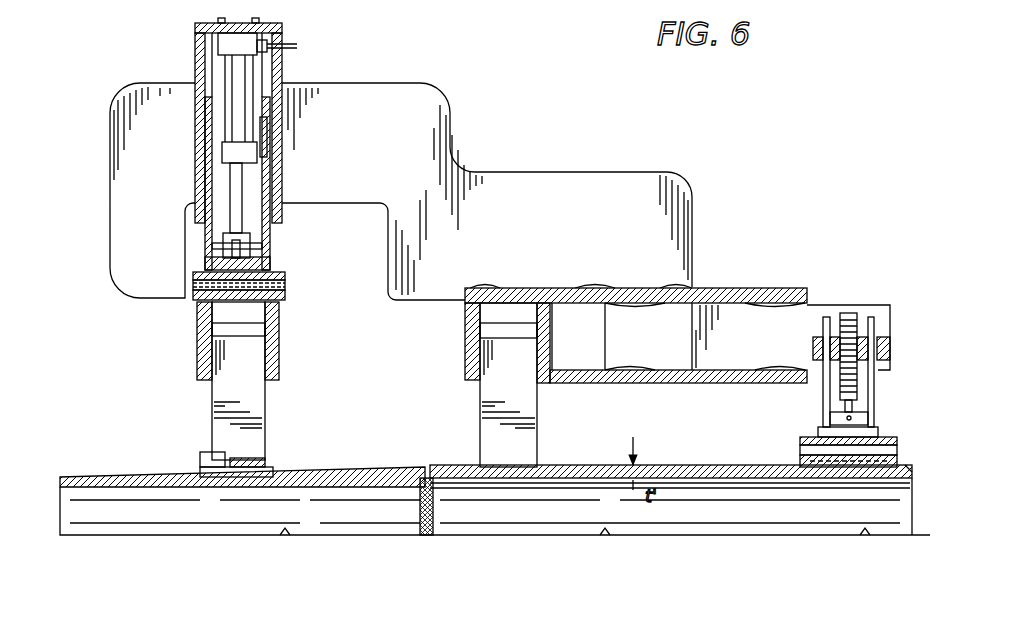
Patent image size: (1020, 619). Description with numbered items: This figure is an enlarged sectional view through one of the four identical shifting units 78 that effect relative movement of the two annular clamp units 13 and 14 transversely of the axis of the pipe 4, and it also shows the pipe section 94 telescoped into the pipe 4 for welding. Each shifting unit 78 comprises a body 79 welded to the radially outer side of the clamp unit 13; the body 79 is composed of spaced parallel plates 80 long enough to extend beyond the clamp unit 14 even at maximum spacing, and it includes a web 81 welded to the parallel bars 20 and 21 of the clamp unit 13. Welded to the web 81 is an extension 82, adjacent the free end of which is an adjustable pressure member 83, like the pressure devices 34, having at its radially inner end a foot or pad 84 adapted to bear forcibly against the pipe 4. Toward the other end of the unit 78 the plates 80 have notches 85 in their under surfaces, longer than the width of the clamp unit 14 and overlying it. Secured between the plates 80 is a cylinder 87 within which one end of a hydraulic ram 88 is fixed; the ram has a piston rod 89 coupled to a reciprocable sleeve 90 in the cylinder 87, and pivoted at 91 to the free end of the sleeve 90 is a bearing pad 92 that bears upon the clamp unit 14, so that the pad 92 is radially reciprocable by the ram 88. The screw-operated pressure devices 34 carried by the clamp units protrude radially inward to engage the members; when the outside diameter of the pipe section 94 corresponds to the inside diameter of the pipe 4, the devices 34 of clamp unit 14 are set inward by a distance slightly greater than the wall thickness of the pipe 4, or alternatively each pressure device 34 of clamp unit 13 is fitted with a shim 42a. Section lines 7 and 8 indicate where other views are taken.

The pipe 4 is at (666, 466).
The section line 7 is at (908, 548).
The section line 8 is at (190, 413).
The clamp unit 13 is at (450, 361).
The clamp unit 14 is at (137, 350).
The bar 20 is at (197, 346).
The bar 21 is at (280, 361).
The adjustable pressure device 34 is at (270, 424).
The shim 42a is at (200, 458).
The shifting means 78 is at (418, 42).
The body 79 is at (440, 118).
The plate 80 is at (530, 241).
The web 81 is at (620, 290).
The extension 82 is at (625, 385).
The adjustable pressure member 83 is at (805, 402).
The foot or pad 84 is at (800, 456).
The notch 85 is at (337, 205).
The cylinder 87 is at (283, 70).
The hydraulic ram 88 is at (235, 112).
The piston rod 89 is at (235, 200).
The reciprocable sleeve 90 is at (205, 240).
The pivot 91 is at (286, 287).
The bearing member or pad 92 is at (193, 296).
The pipe section 94 is at (325, 477).